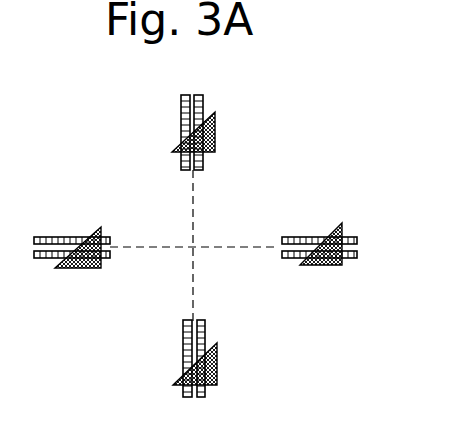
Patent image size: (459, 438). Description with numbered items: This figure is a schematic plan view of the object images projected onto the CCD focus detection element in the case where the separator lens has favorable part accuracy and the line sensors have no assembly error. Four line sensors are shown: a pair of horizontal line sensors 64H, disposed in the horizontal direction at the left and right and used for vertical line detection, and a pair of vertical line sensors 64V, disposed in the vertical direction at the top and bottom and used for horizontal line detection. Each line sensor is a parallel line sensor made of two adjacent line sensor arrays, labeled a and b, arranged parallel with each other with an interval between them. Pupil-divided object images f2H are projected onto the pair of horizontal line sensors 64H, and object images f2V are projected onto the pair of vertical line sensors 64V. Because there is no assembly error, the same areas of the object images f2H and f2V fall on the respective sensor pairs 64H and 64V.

The pair of vertical line sensors 64V is at (142, 245).
The pair of horizontal line sensors 64H is at (195, 208).
The object image f2V is at (215, 135).
The object image f2H is at (82, 268).